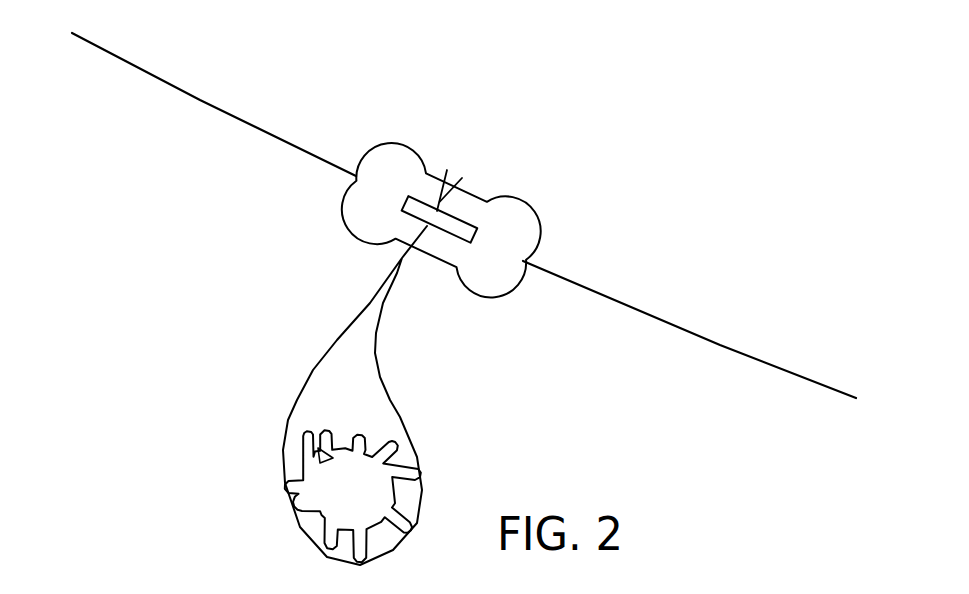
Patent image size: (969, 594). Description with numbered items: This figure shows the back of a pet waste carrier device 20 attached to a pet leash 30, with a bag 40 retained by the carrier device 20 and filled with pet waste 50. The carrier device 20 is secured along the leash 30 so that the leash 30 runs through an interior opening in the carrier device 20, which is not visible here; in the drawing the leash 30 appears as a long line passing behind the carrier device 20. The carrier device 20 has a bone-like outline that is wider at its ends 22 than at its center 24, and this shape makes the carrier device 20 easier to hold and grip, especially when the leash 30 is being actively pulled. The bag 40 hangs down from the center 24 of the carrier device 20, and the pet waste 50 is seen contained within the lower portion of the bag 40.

The pet waste carrier device 20 is at (490, 128).
The ends 22 is at (518, 240).
The center 24 is at (432, 175).
The pet leash 30 is at (200, 100).
The bag 40 is at (302, 410).
The pet waste 50 is at (383, 497).